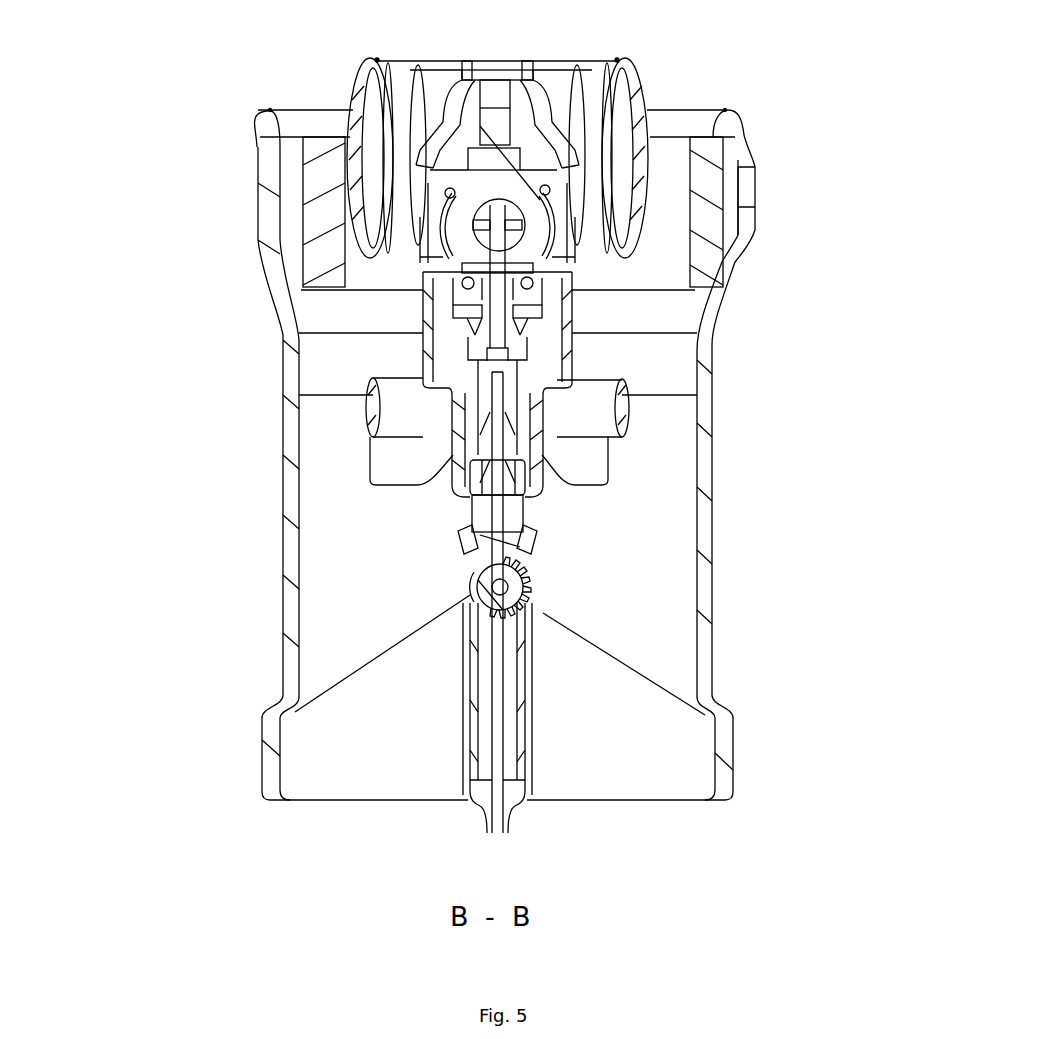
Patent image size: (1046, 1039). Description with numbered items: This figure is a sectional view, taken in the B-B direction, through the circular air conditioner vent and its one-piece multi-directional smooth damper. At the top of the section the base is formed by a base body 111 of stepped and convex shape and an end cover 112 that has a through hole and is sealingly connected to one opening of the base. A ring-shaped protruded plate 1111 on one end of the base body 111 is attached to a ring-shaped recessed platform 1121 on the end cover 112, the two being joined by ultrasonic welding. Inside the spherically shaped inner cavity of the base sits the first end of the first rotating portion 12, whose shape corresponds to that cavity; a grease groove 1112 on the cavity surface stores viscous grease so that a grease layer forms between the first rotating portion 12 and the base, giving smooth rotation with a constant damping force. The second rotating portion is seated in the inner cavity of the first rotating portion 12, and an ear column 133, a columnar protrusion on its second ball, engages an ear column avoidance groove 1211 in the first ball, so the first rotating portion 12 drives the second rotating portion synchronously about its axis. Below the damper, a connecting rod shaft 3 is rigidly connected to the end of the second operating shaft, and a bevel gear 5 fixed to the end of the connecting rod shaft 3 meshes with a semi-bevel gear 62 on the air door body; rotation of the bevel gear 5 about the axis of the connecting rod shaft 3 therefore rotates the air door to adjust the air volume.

The base body 111 is at (440, 243).
The ring-shaped protruded plate 1111 is at (440, 190).
The grease groove 1112 is at (452, 255).
The end cover 112 is at (433, 195).
The ring-shaped recessed platform 1121 is at (437, 197).
The first rotating portion 12 is at (500, 152).
The ear column avoidance groove 1211 is at (522, 230).
The ear column 133 is at (525, 218).
The connecting rod shaft 3 is at (484, 373).
The bevel gear 5 is at (517, 540).
The semi-bevel gear 62 is at (547, 587).